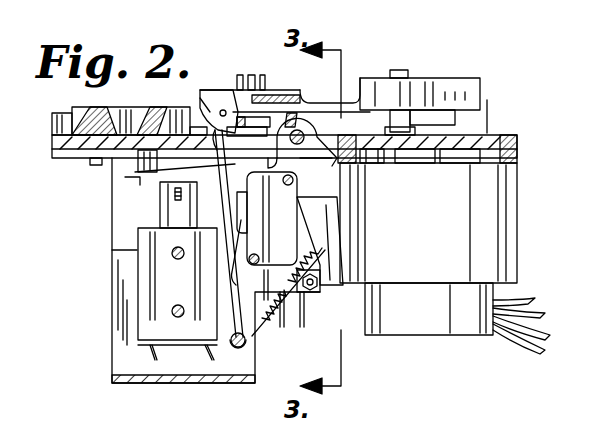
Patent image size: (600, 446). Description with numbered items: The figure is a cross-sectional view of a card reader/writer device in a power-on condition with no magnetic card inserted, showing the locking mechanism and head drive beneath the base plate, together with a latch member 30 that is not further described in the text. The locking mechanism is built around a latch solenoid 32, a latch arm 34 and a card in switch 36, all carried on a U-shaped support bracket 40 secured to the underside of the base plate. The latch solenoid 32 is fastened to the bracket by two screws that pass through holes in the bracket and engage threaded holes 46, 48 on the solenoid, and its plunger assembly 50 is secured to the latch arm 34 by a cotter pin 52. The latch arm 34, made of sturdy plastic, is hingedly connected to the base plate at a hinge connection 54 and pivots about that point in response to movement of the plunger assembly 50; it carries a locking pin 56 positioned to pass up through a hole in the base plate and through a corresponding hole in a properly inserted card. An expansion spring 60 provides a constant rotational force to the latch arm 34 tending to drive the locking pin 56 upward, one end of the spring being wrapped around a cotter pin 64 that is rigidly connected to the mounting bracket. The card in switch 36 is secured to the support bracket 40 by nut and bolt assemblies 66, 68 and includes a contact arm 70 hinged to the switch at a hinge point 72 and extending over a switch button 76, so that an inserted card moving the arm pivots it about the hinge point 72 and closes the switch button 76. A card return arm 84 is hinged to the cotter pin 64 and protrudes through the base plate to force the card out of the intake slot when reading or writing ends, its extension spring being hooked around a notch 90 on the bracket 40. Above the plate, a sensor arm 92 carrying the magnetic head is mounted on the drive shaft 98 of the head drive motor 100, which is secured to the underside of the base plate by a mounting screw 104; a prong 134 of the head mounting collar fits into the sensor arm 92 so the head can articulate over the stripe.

The latch member 30 is at (228, 112).
The latch solenoid 32 is at (190, 328).
The latch arm 34 is at (125, 180).
The card in switch 36 is at (305, 243).
The U-shaped support bracket 40 is at (112, 354).
The threaded hole 46 is at (176, 258).
The threaded hole 48 is at (176, 305).
The plunger assembly 50 is at (160, 222).
The cotter pin 52 is at (168, 196).
The hinge connection 54 is at (305, 131).
The locking pin 56 is at (136, 168).
The expansion spring 60 is at (262, 326).
The cotter pin 64 is at (242, 350).
The nut and bolt assembly 66 is at (289, 181).
The nut and bolt assembly 68 is at (259, 256).
The contact arm 70 is at (237, 200).
The hinge point 72 is at (228, 272).
The switch button 76 is at (250, 198).
The card return arm 84 is at (230, 305).
The notch 90 is at (112, 254).
The sensor arm 92 is at (370, 85).
The drive shaft 98 is at (396, 70).
The head drive motor 100 is at (506, 203).
The mounting screw 104 is at (366, 165).
The prong 134 is at (205, 108).